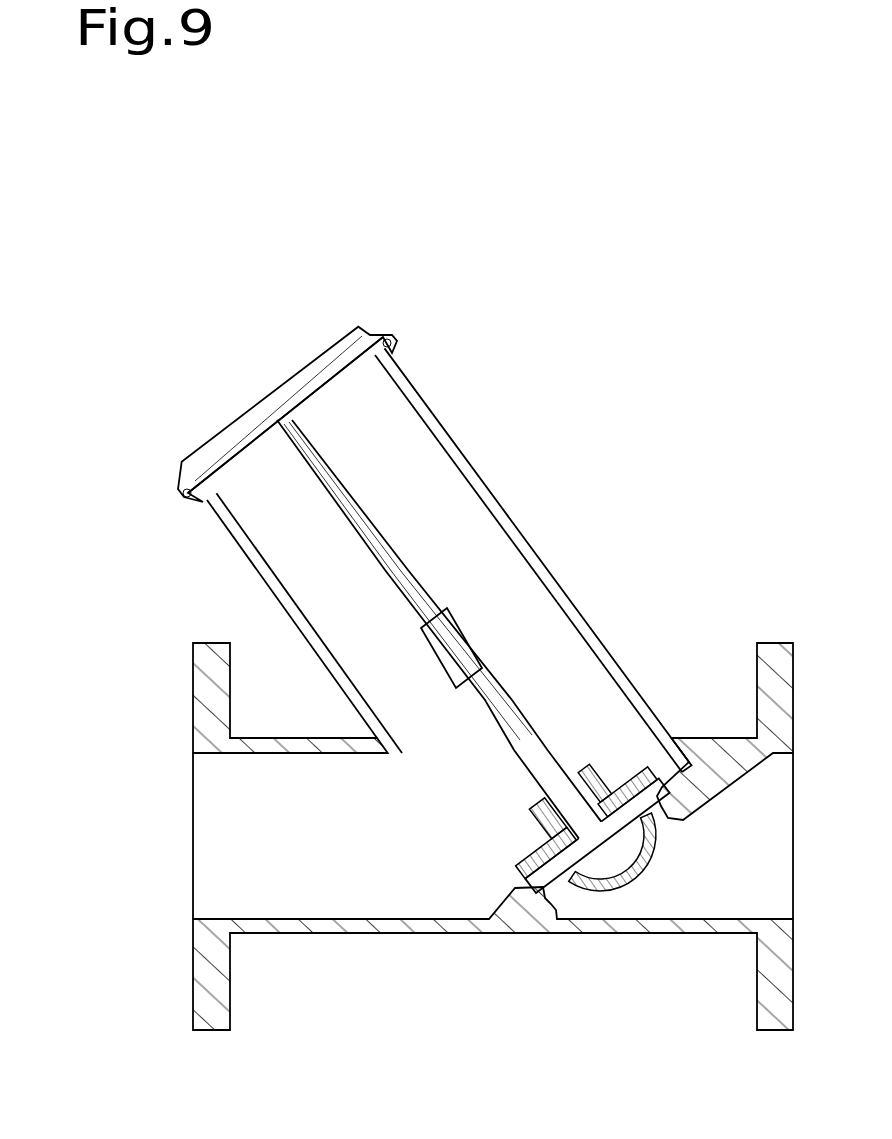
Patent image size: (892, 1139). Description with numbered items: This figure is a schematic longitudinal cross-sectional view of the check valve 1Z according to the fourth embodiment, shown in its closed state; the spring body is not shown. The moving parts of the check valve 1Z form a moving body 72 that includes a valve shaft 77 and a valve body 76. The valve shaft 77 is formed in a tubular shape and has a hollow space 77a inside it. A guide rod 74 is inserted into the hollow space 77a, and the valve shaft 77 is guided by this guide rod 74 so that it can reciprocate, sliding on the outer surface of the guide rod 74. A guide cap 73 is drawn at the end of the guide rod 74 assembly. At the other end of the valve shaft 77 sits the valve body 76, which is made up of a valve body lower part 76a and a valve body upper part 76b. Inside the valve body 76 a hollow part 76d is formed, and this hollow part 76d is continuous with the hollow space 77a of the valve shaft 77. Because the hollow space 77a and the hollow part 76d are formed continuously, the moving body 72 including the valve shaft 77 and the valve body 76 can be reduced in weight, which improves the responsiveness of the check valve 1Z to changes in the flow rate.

The check valve 1Z is at (204, 347).
The moving body 72 is at (611, 752).
The guide cap 73 is at (303, 355).
The guide rod 74 is at (367, 503).
The valve body 76 is at (637, 1000).
The valve body lower part 76a is at (577, 878).
The valve body upper part 76b is at (504, 882).
The hollow part 76d is at (593, 892).
The valve shaft 77 is at (483, 692).
The hollow space 77a is at (515, 702).